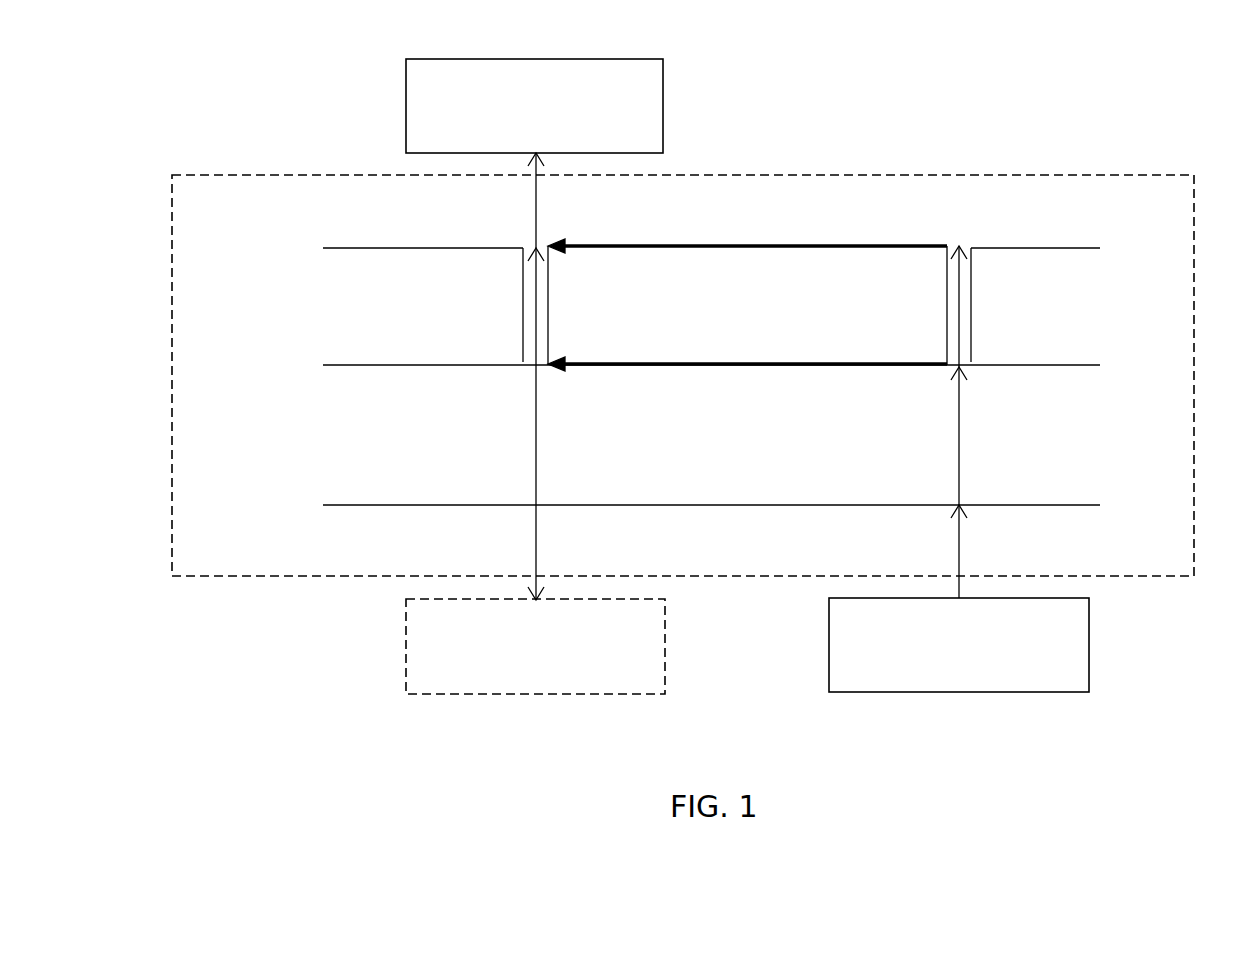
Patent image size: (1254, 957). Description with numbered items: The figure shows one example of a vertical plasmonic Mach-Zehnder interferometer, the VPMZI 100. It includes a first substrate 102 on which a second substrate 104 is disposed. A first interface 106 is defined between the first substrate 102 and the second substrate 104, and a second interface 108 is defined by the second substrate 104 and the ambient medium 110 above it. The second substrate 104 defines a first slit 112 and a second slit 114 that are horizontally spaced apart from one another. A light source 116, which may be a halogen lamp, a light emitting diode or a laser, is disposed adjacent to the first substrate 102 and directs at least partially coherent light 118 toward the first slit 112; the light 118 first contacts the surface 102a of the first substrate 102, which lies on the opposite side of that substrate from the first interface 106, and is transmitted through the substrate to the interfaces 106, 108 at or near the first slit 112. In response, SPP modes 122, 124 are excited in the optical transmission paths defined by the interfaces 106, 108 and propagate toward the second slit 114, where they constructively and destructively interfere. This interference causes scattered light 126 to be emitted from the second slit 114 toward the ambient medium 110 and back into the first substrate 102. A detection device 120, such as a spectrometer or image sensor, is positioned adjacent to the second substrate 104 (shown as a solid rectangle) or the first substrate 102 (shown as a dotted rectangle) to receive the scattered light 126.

The vertical plasmonic Mach-Zehnder interferometer 100 is at (1153, 175).
The first substrate 102 is at (781, 449).
The surface of first substrate 102a is at (690, 506).
The second substrate 104 is at (781, 316).
The first interface 106 is at (323, 366).
The second interface 108 is at (323, 248).
The ambient medium 110 is at (781, 212).
The first slit 112 is at (971, 317).
The second slit 114 is at (523, 315).
The light source 116 is at (829, 652).
The light 118 is at (960, 557).
The detection device 120 is at (406, 112).
The SPP mode 122 is at (662, 366).
The SPP mode 124 is at (817, 246).
The scattered light 126 is at (536, 218).